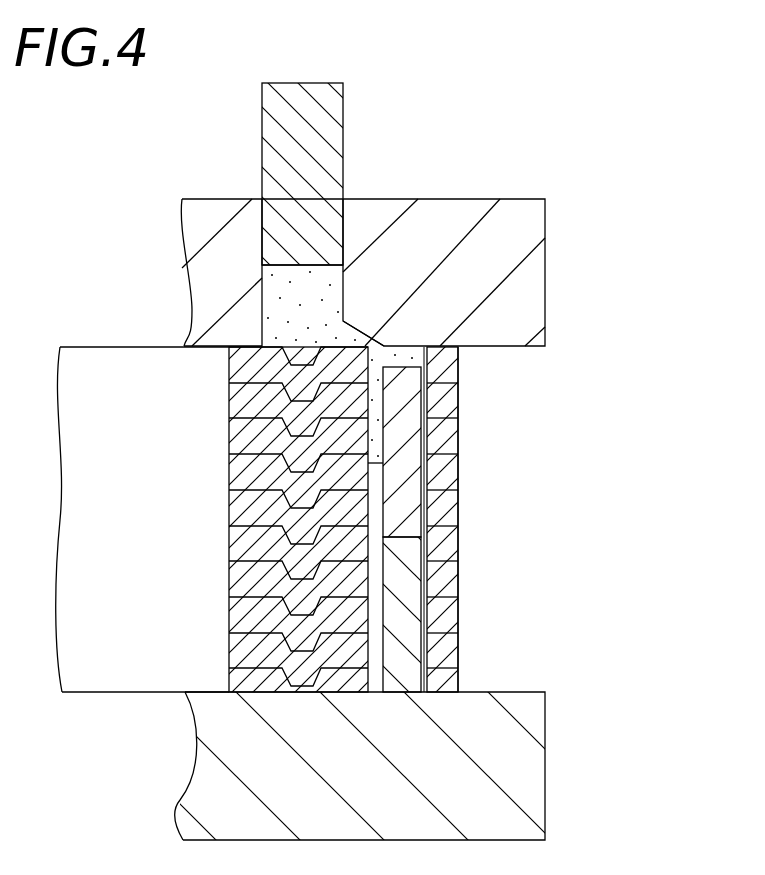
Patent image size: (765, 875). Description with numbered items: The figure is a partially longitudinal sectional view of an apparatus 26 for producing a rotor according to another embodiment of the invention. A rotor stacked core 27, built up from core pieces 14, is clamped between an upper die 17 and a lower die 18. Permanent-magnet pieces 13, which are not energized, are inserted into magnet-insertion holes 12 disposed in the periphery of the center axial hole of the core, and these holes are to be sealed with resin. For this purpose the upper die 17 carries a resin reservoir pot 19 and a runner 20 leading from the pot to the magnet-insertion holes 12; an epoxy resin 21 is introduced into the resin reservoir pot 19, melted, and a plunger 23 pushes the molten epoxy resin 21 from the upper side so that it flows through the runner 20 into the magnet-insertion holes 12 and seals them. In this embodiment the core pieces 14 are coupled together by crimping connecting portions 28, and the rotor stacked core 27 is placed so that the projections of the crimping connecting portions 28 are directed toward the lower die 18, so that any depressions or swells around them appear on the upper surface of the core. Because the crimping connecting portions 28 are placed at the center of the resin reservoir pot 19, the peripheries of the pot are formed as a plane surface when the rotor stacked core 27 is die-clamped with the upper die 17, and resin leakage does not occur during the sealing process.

The magnet-insertion holes 12 is at (378, 598).
The permanent-magnet pieces 13 is at (410, 447).
The core pieces 14 is at (453, 410).
The upper die 17 is at (522, 247).
The lower die 18 is at (522, 777).
The resin reservoir pot 19 is at (262, 252).
The runner 20 is at (355, 328).
The epoxy resin 21 is at (268, 290).
The plunger 23 is at (309, 93).
The apparatus for producing a rotor 26 is at (493, 146).
The rotor stacked core 27 is at (458, 505).
The crimping connecting portions 28 is at (302, 692).